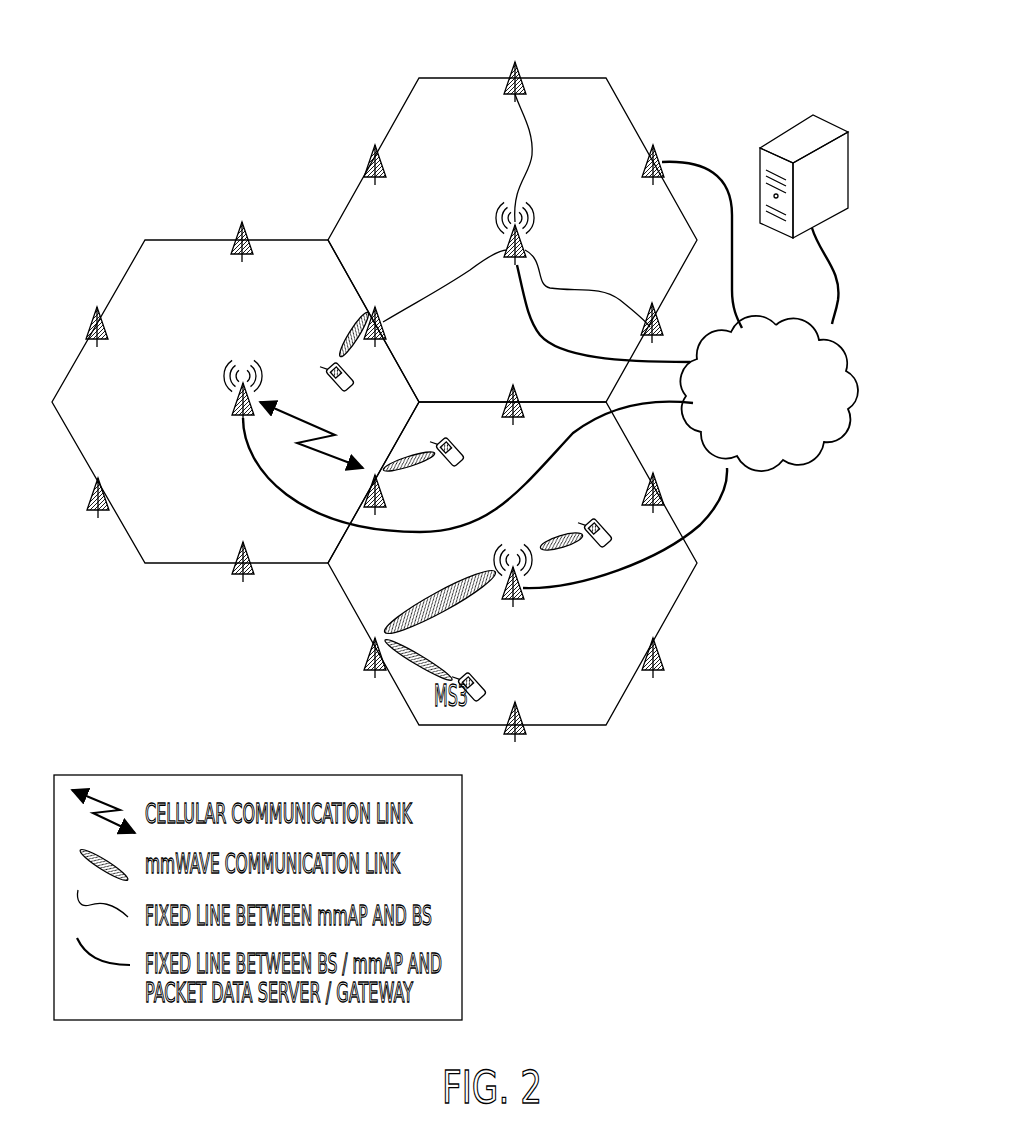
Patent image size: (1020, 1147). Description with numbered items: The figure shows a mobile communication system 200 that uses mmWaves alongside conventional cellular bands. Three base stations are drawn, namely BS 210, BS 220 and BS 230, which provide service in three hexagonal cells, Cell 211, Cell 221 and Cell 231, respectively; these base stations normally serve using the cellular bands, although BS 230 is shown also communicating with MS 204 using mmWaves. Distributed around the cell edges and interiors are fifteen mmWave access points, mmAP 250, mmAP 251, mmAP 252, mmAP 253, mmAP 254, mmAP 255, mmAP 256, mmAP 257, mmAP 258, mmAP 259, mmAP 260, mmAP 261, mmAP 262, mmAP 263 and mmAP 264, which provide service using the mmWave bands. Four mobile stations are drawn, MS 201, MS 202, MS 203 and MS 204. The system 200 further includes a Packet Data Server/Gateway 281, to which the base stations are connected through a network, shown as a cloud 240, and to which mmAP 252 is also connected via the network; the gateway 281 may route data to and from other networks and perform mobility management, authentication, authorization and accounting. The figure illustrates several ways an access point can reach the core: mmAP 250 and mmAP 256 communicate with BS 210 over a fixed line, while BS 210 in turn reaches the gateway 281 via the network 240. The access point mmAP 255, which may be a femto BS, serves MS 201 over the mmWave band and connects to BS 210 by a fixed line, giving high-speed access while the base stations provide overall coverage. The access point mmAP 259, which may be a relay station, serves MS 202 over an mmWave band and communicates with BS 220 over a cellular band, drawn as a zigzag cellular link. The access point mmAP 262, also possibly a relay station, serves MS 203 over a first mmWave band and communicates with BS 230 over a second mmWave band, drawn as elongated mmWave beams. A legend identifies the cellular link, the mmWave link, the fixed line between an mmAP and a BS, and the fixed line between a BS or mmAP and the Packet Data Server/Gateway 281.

The mobile communication system 200 is at (230, 80).
The mobile station 201 is at (326, 371).
The mobile station 202 is at (462, 452).
The mobile station 203 is at (490, 690).
The mobile station 204 is at (584, 526).
The base station 210 is at (500, 222).
The cell 211 is at (455, 76).
The base station 220 is at (224, 378).
The cell 221 is at (188, 238).
The base station 230 is at (500, 566).
The cell 231 is at (680, 588).
The packet data network 240 is at (782, 414).
The mmWave access point 250 is at (514, 60).
The mmWave access point 251 is at (375, 144).
The mmWave access point 252 is at (655, 144).
The mmWave access point 253 is at (242, 221).
The mmWave access point 254 is at (96, 306).
The mmWave access point 255 is at (376, 306).
The mmWave access point 256 is at (651, 303).
The mmWave access point 257 is at (512, 384).
The mmWave access point 258 is at (99, 477).
The mmWave access point 259 is at (372, 494).
The mmWave access point 260 is at (650, 488).
The mmWave access point 261 is at (243, 578).
The mmWave access point 262 is at (374, 676).
The mmWave access point 263 is at (518, 738).
The mmWave access point 264 is at (655, 676).
The packet data server/gateway 281 is at (787, 130).